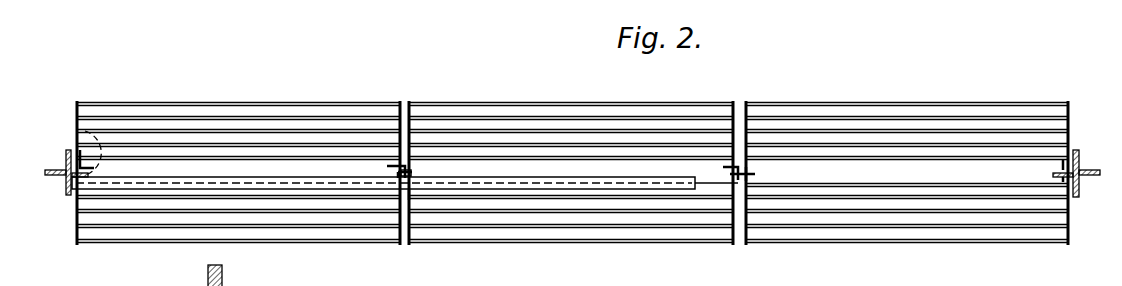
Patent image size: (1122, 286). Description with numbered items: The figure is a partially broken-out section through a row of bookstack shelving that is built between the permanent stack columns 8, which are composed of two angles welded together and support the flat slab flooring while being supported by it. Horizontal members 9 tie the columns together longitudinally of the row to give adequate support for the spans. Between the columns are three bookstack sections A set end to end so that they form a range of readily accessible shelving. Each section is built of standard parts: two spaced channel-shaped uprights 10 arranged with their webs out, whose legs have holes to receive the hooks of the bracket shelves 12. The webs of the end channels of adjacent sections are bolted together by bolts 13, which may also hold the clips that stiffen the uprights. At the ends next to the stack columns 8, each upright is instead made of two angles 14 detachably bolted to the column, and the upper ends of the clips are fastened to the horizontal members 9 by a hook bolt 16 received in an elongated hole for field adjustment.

The bookstack section A is at (572, 173).
The stack column 8 is at (58, 174).
The horizontal member 9 is at (585, 178).
The upright 10 is at (405, 165).
The bracket shelf 12 is at (509, 107).
The bolt 13 is at (412, 173).
The angle 14 is at (77, 136).
The hook bolt 16 is at (413, 192).